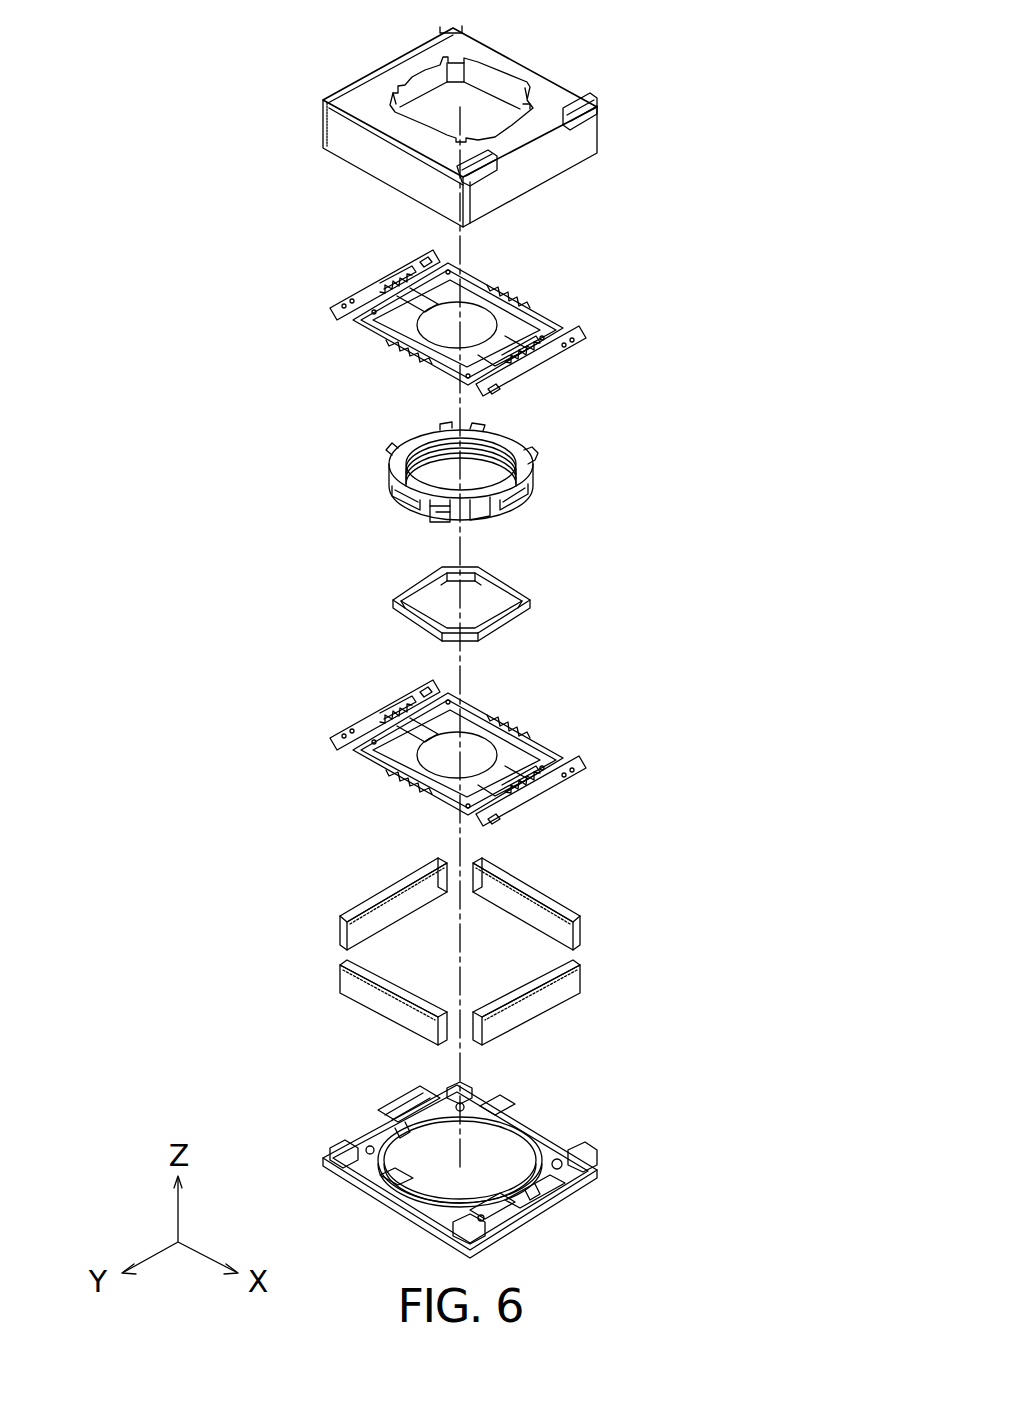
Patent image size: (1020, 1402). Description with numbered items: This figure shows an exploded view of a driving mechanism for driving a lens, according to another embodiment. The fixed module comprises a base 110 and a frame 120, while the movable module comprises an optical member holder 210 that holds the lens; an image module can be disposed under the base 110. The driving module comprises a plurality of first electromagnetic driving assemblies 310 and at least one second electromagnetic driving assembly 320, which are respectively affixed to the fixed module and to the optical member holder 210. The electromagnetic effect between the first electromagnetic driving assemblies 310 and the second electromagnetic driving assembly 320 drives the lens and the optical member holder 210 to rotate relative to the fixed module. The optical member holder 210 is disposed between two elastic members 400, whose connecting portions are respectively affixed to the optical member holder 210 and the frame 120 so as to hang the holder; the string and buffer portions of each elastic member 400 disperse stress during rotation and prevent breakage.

The frame 120 is at (552, 96).
The elastic member 400 is at (557, 327).
The optical member holder 210 is at (530, 460).
The second electromagnetic driving assembly 320 is at (530, 600).
The first electromagnetic driving assemblies 310 is at (383, 978).
The base 110 is at (550, 1153).